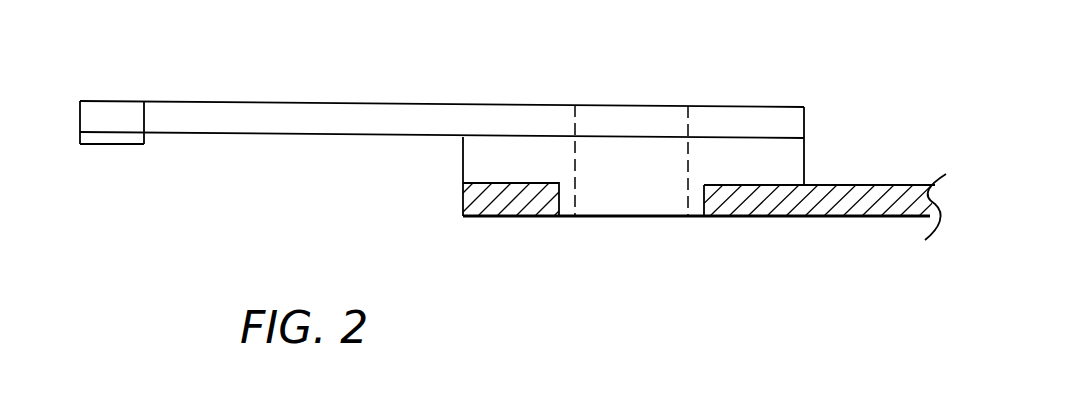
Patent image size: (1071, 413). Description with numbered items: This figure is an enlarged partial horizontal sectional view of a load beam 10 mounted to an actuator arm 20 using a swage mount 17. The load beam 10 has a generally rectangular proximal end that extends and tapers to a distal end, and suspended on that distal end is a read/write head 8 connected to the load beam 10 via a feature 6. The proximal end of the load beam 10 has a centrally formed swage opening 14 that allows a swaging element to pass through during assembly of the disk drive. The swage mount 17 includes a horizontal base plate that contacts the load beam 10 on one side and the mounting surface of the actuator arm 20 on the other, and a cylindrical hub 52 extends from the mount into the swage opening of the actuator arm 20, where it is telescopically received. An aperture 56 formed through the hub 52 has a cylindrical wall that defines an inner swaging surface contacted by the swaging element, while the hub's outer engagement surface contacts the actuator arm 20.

The feature 6 is at (107, 117).
The read/write head 8 is at (93, 138).
The load beam 10 is at (325, 113).
The swage opening 14 is at (647, 118).
The swage mount 17 is at (793, 162).
The actuator arm 20 is at (807, 208).
The hub 52 is at (565, 207).
The aperture 56 is at (637, 187).